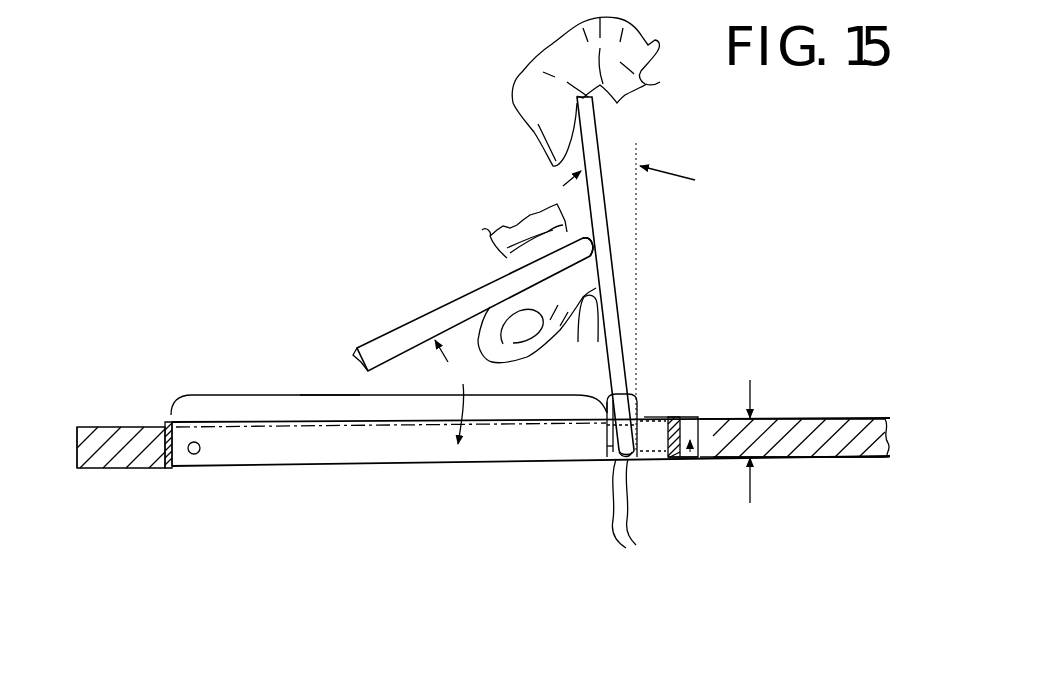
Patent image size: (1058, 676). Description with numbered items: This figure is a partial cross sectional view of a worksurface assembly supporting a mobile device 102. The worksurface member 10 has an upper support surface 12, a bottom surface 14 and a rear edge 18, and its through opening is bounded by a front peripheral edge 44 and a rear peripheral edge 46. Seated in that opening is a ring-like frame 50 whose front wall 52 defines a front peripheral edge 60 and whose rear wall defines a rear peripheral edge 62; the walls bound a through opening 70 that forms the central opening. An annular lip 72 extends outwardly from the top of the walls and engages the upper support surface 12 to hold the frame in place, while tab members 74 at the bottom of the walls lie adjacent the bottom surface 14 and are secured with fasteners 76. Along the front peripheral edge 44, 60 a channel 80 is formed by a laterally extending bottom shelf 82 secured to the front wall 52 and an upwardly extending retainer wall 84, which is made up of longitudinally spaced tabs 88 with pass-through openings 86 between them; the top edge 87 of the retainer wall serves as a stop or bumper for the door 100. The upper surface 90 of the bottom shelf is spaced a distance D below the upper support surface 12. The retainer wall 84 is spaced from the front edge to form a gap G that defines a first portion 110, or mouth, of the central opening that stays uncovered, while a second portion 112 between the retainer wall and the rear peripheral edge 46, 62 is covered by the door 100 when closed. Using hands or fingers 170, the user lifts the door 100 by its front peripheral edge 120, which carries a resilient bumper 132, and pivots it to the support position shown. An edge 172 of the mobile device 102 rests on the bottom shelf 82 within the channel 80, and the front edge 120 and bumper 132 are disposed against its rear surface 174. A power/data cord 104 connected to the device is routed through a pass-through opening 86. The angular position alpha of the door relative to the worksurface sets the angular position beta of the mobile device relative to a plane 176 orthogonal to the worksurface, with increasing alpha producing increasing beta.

The worksurface member 10 is at (108, 442).
The upper support surface 12 is at (770, 421).
The bottom surface 14 is at (800, 458).
The rear edge 18 is at (78, 469).
The front peripheral edge 44 is at (687, 459).
The rear peripheral edge 46 is at (173, 453).
The frame 50 is at (358, 443).
The front wall 52 is at (690, 453).
The front peripheral edge 60 is at (670, 412).
The rear peripheral edge 62 is at (173, 438).
The through opening 70 is at (295, 438).
The annular lip 72 is at (681, 421).
The tab members 74 is at (674, 458).
The fasteners 76 is at (692, 458).
The channel 80 is at (649, 405).
The bottom shelf 82 is at (607, 455).
The retainer wall 84 is at (607, 430).
The pass-through opening 86 is at (645, 460).
The top edge 87 is at (605, 403).
The tabs 88 is at (606, 447).
The upper surface 90 is at (628, 396).
The door 100 is at (474, 293).
The mobile device 102 is at (606, 213).
The power/data cord 104 is at (612, 522).
The first portion 110 is at (641, 418).
The second portion 112 is at (330, 395).
The front peripheral edge 120 is at (588, 249).
The resilient bumper 132 is at (588, 247).
The hands or fingers 170 is at (498, 368).
The edge 172 is at (621, 464).
The rear surface 174 is at (584, 320).
The plane 176 is at (639, 151).
The distance D is at (752, 426).
The angular position of the door alpha is at (449, 392).
The angular position of the mobile device beta is at (629, 167).